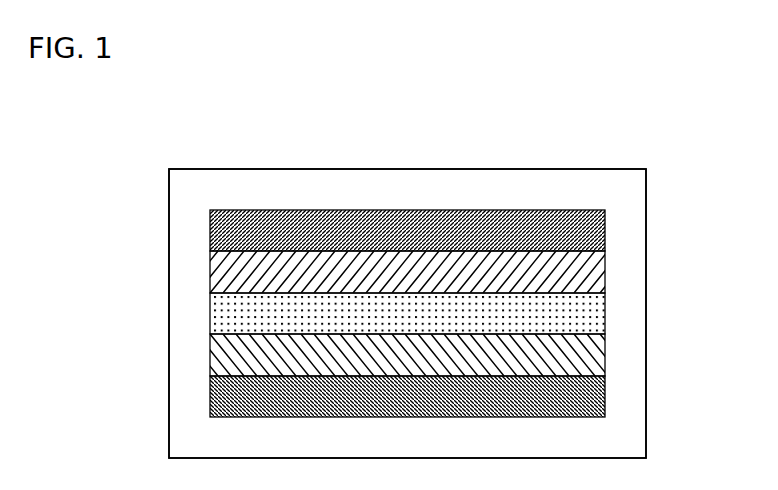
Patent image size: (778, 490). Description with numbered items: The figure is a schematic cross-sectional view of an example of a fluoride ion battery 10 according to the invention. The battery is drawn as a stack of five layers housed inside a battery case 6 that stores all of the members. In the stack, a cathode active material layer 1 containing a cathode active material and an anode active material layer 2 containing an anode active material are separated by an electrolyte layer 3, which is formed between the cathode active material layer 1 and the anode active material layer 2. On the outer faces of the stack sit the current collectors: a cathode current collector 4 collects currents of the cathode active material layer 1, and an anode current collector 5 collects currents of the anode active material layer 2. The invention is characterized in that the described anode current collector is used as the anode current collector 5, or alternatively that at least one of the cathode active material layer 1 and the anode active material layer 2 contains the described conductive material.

The fluoride ion battery 10 is at (623, 143).
The battery case 6 is at (618, 197).
The cathode current collector 4 is at (582, 235).
The cathode active material layer 1 is at (578, 277).
The electrolyte layer 3 is at (578, 318).
The anode active material layer 2 is at (578, 359).
The anode current collector 5 is at (578, 400).